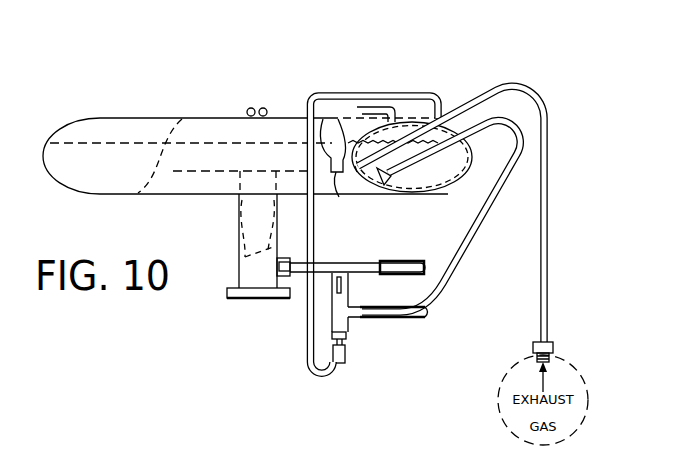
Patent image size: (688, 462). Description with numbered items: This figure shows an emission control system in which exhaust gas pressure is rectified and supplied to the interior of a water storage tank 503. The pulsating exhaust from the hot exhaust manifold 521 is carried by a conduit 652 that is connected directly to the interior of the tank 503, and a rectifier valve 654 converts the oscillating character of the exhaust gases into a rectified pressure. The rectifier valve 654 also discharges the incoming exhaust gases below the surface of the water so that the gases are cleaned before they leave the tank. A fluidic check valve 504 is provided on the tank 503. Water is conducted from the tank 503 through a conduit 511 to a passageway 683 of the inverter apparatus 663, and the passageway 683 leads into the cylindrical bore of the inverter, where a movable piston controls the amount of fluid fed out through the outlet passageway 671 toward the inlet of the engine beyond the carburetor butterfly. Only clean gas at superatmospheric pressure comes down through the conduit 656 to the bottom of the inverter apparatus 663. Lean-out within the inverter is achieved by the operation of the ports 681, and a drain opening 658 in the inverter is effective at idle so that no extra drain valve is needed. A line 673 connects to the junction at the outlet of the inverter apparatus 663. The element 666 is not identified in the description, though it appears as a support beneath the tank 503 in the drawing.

The water storage tank 503 is at (440, 190).
The fluidic check valve 504 is at (365, 106).
The conduit 511 is at (545, 148).
The hot exhaust manifold 521 is at (557, 357).
The conduit 652 is at (520, 93).
The rectifier valve 654 is at (343, 190).
The conduit 656 is at (307, 315).
The drain opening 658 is at (347, 336).
The inverter apparatus 663 is at (371, 254).
The support stand 666 is at (242, 252).
The outlet passageway 671 is at (323, 262).
The line 673 is at (291, 259).
The ports 681 is at (342, 287).
The passageway 683 is at (351, 318).